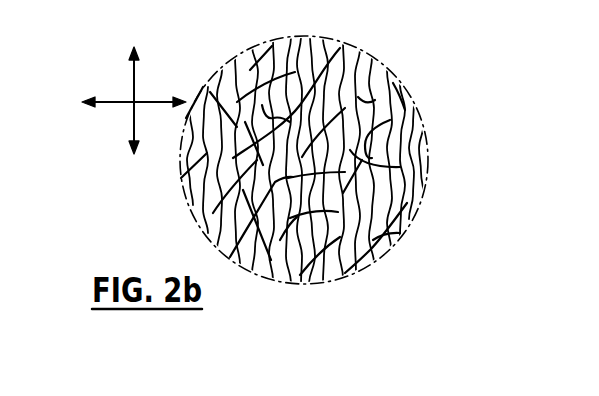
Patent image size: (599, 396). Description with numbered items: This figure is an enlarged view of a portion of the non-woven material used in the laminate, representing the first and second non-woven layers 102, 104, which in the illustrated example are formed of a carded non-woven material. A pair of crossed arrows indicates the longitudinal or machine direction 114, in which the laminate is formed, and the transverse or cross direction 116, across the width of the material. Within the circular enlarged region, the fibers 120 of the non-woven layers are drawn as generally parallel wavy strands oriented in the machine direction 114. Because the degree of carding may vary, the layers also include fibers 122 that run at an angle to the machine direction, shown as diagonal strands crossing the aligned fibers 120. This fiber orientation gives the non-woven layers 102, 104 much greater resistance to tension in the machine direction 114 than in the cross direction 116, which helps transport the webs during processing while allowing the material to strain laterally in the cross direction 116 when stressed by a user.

The first non-woven layer 102 is at (375, 262).
The second non-woven layer 104 is at (302, 160).
The machine direction 114 is at (135, 86).
The cross direction 116 is at (110, 103).
The fibers 120 is at (375, 100).
The fibers oriented at an angle 122 is at (400, 167).